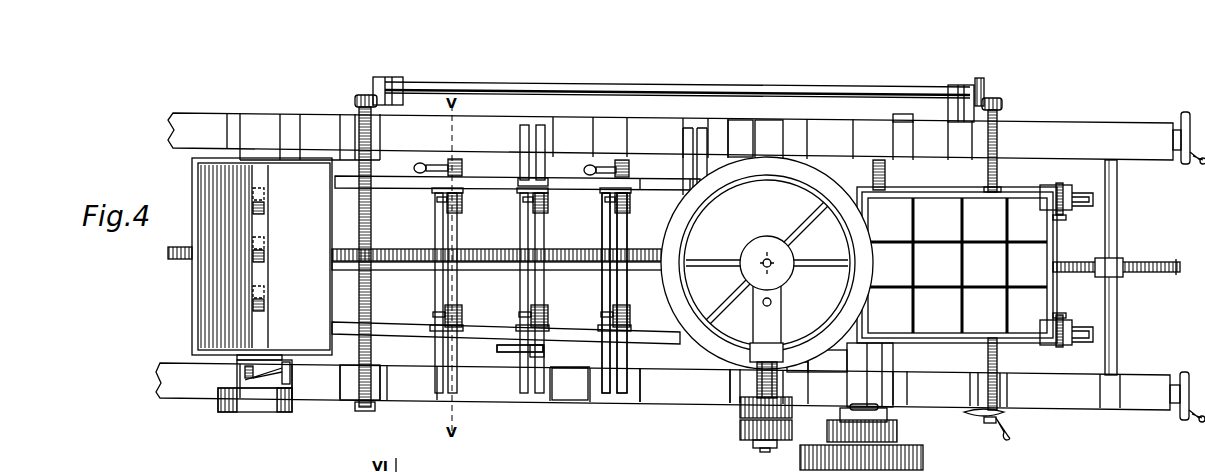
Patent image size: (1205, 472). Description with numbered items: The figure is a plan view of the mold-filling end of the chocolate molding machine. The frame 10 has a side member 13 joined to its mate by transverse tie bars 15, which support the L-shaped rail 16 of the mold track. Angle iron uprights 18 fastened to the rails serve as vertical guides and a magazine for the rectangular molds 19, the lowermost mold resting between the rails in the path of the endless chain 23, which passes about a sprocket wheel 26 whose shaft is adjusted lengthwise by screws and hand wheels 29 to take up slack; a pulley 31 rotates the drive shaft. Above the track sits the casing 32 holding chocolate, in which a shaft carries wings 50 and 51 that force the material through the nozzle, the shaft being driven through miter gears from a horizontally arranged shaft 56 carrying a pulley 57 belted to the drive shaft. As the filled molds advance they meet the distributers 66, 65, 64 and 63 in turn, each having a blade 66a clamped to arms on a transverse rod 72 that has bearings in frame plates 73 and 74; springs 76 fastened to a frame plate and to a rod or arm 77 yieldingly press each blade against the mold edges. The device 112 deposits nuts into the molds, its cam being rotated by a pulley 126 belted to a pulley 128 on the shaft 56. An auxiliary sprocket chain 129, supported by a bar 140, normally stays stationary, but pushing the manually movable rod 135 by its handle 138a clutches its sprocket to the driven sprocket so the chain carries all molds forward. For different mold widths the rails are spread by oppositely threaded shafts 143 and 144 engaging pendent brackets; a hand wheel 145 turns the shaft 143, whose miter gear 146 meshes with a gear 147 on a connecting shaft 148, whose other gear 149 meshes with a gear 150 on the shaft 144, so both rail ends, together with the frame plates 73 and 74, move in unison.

The frame 10 is at (648, 404).
The side member 13 is at (685, 385).
The transverse tie bar 15 is at (567, 401).
The L-shaped rail 16 is at (1093, 195).
The angle iron upright 18 is at (1062, 184).
The rectangular mold 19 is at (1040, 235).
The endless chain 23 is at (1090, 278).
The sprocket wheel 26 is at (1150, 262).
The hand wheel 29 is at (1183, 113).
The pulley 31 is at (932, 458).
The casing 32 is at (622, 297).
The wing 50 is at (767, 263).
The wing 51 is at (738, 307).
The horizontally arranged shaft 56 is at (765, 451).
The pulley 57 is at (898, 436).
The distributer 63 is at (442, 160).
The distributer 64 is at (522, 163).
The distributer 65 is at (625, 160).
The distributer 66 is at (665, 175).
The blade 66a is at (450, 222).
The rod 72 is at (620, 388).
The frame plate 73 is at (579, 344).
The frame plate 74 is at (464, 175).
The spring 76 is at (500, 351).
The rod or arm 77 is at (512, 356).
The nut depositing device 112 is at (192, 318).
The pulley 126 is at (255, 394).
The pulley 128 is at (740, 410).
The auxiliary sprocket chain 129 is at (172, 261).
The manually movable rod 135 is at (893, 363).
The handle 138a is at (890, 416).
The bar 140 is at (577, 262).
The threaded shaft 143 is at (999, 175).
The threaded shaft 144 is at (372, 226).
The hand wheel 145 is at (1008, 420).
The miter gear 146 is at (1003, 105).
The miter gear 147 is at (985, 88).
The shaft 148 is at (592, 81).
The gear 149 is at (376, 84).
The gear 150 is at (354, 101).